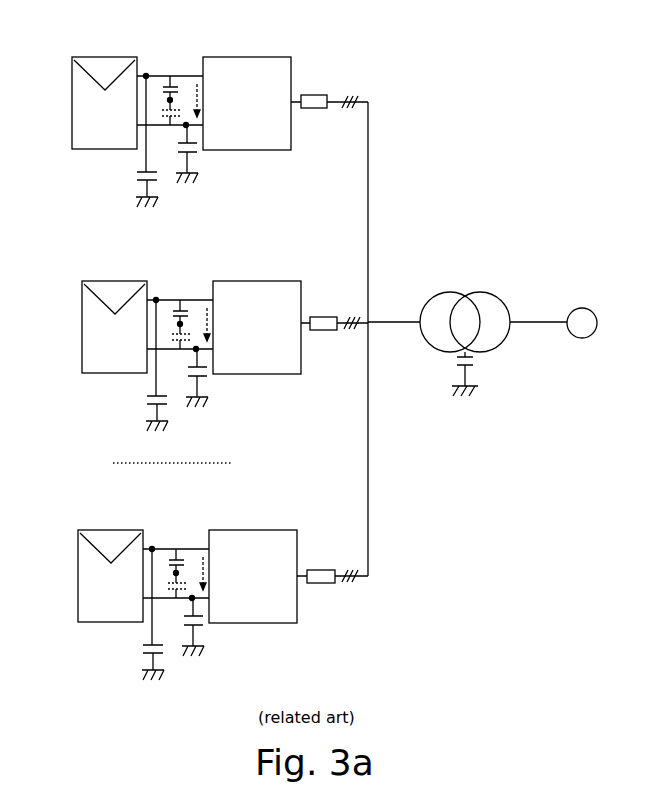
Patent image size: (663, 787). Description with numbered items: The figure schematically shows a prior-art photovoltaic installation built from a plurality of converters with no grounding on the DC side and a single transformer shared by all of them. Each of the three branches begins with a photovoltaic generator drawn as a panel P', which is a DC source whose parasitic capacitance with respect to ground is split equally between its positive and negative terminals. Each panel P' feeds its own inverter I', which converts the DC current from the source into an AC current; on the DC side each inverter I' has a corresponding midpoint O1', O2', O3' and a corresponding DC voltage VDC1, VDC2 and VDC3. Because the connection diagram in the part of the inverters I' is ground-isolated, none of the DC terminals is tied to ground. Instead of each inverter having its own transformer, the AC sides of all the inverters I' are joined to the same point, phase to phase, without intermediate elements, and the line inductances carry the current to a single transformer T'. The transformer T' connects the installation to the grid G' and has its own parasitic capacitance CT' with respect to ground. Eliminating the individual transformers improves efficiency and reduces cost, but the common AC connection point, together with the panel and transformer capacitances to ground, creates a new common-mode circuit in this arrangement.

The panel P' is at (109, 339).
The inverter I' is at (252, 340).
The midpoint O1' is at (160, 69).
The midpoint O2' is at (170, 293).
The midpoint O3' is at (166, 542).
The DC voltage VDC1 is at (192, 93).
The DC voltage VDC2 is at (219, 289).
The DC voltage VDC3 is at (215, 538).
The transformer T' is at (465, 322).
The parasitic capacitance of the transformer CT' is at (496, 374).
The grid G' is at (594, 303).